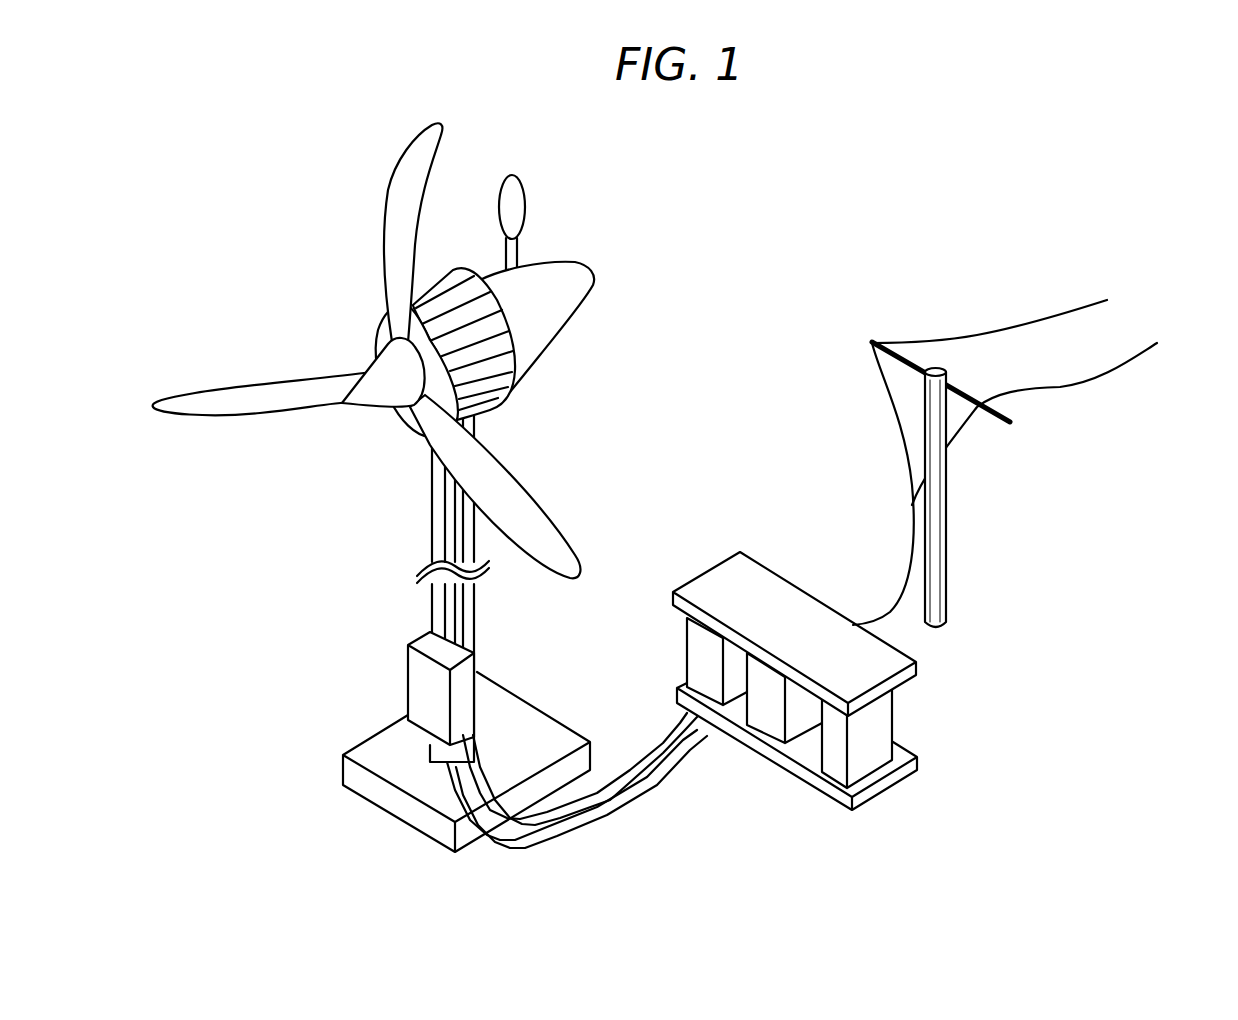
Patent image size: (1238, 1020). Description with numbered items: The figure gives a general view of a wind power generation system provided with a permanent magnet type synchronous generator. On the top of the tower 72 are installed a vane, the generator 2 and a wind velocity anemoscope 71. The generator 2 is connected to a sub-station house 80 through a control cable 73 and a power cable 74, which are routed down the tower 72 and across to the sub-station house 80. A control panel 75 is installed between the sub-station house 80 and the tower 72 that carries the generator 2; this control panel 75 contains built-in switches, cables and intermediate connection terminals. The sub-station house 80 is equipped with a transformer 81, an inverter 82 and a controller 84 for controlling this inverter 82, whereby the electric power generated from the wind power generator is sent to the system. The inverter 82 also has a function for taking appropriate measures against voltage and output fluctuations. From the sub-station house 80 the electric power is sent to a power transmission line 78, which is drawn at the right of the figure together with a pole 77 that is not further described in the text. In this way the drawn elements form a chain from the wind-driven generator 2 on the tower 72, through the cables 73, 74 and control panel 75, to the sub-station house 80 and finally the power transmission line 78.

The generator 2 is at (494, 330).
The wind velocity anemoscope 71 is at (514, 204).
The tower 72 is at (430, 472).
The control cable 73 is at (446, 542).
The power cable 74 is at (458, 613).
The control panel 75 is at (407, 683).
The lightning rod 77 is at (940, 527).
The power transmission line 78 is at (985, 335).
The sub-station house 80 is at (861, 710).
The transformer 81 is at (719, 690).
The inverter 82 is at (770, 727).
The controller 84 is at (834, 760).